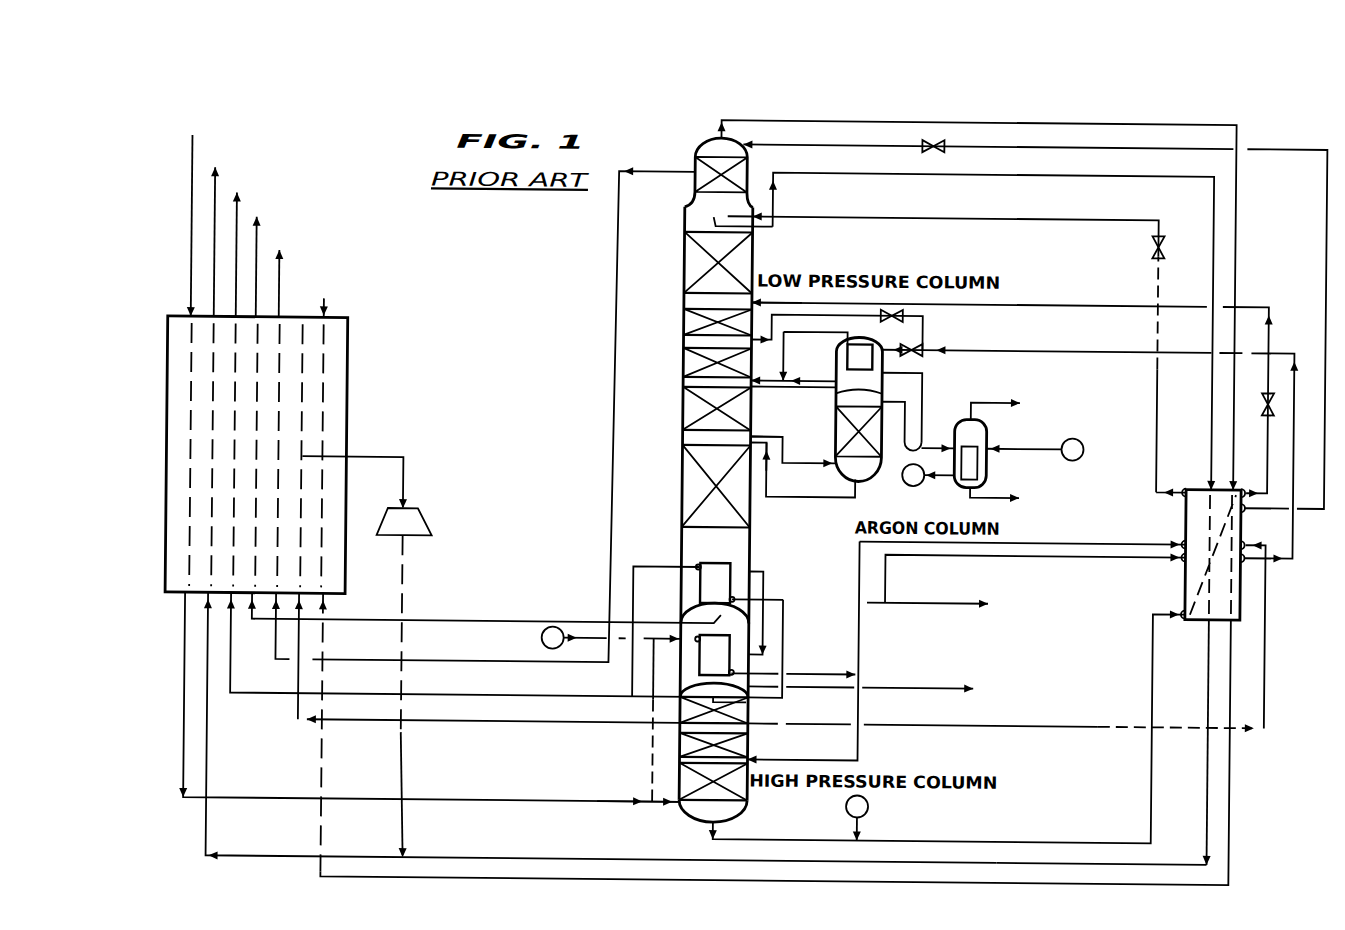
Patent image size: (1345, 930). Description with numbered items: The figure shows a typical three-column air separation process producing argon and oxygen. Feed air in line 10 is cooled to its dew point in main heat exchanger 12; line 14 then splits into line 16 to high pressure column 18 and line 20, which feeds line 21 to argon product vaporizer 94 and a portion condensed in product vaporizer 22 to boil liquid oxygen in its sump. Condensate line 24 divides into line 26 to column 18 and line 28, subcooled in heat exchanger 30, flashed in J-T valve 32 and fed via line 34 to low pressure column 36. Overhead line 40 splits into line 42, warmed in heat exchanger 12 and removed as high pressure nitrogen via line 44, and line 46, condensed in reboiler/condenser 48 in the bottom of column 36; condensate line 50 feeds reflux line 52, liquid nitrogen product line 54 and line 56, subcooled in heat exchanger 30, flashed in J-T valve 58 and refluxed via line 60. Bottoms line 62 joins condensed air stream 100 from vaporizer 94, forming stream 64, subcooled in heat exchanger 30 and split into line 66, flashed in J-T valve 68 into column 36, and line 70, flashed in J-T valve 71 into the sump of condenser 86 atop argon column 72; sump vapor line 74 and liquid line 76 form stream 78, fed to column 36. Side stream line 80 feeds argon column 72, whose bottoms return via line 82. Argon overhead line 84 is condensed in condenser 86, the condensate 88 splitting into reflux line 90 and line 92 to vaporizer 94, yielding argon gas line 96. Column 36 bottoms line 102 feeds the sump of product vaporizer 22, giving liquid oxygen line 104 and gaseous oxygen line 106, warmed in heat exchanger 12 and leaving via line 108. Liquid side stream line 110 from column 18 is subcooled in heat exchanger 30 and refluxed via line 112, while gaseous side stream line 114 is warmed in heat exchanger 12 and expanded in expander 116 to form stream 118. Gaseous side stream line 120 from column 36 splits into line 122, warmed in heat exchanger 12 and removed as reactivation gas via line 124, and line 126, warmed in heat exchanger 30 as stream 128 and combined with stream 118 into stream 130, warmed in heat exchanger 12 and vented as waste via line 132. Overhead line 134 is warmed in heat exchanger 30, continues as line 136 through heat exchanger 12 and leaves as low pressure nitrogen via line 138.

The line 10 is at (190, 178).
The main heat exchanger 12 is at (321, 401).
The line 14 is at (268, 799).
The line 16 is at (660, 817).
The high pressure column 18 is at (750, 793).
The line 20 is at (648, 762).
The line 21 is at (1019, 451).
The product vaporizer 22 is at (727, 667).
The line 24 is at (833, 676).
The line 26 is at (860, 742).
The line 28 is at (1096, 546).
The heat exchanger 30 is at (1184, 590).
The J-T valve 32 is at (1263, 404).
The line 34 is at (1039, 302).
The low pressure column 36 is at (757, 294).
The line 40 is at (646, 703).
The reactivation gas line 42 is at (556, 697).
The line 44 is at (234, 252).
The line 46 is at (636, 578).
The reboiler/condenser 48 is at (722, 563).
The line 50 is at (789, 598).
The line 52 is at (785, 638).
The line 54 is at (913, 601).
The line 56 is at (1048, 562).
The J-T valve 58 is at (938, 152).
The line 60 is at (790, 133).
The line 62 is at (777, 839).
The combined oxygen-enriched liquid stream 64 is at (1017, 839).
The line 66 is at (925, 341).
The J-T valve 68 is at (905, 311).
The line 70 is at (926, 356).
The J-T valve 71 is at (915, 343).
The argon column 72 is at (868, 481).
The line 74 is at (783, 360).
The line 76 is at (764, 394).
The combined stream 78 is at (772, 436).
The line 80 is at (784, 444).
The argon column bottoms return line 82 is at (821, 497).
The line 84 is at (837, 393).
The condenser 86 is at (844, 348).
The crude argon line 88 is at (925, 395).
The line 90 is at (908, 448).
The line 92 is at (934, 443).
The argon product vaporizer 94 is at (988, 419).
The line 96 is at (986, 400).
The stream 100 is at (944, 480).
The line 102 is at (764, 576).
The line 104 is at (902, 669).
The line 106 is at (682, 616).
The line 108 is at (254, 280).
The line 110 is at (839, 722).
The line 112 is at (966, 216).
The line 114 is at (509, 717).
The expander 116 is at (415, 536).
The expanded stream 118 is at (404, 826).
The line 120 is at (769, 230).
The line 122 is at (610, 209).
The line 124 is at (288, 278).
The line 126 is at (1072, 176).
The warmed stream line 128 is at (1209, 663).
The combined stream 130 is at (241, 835).
The line 132 is at (212, 214).
The line 134 is at (903, 123).
The line 136 is at (1234, 775).
The line 138 is at (322, 312).